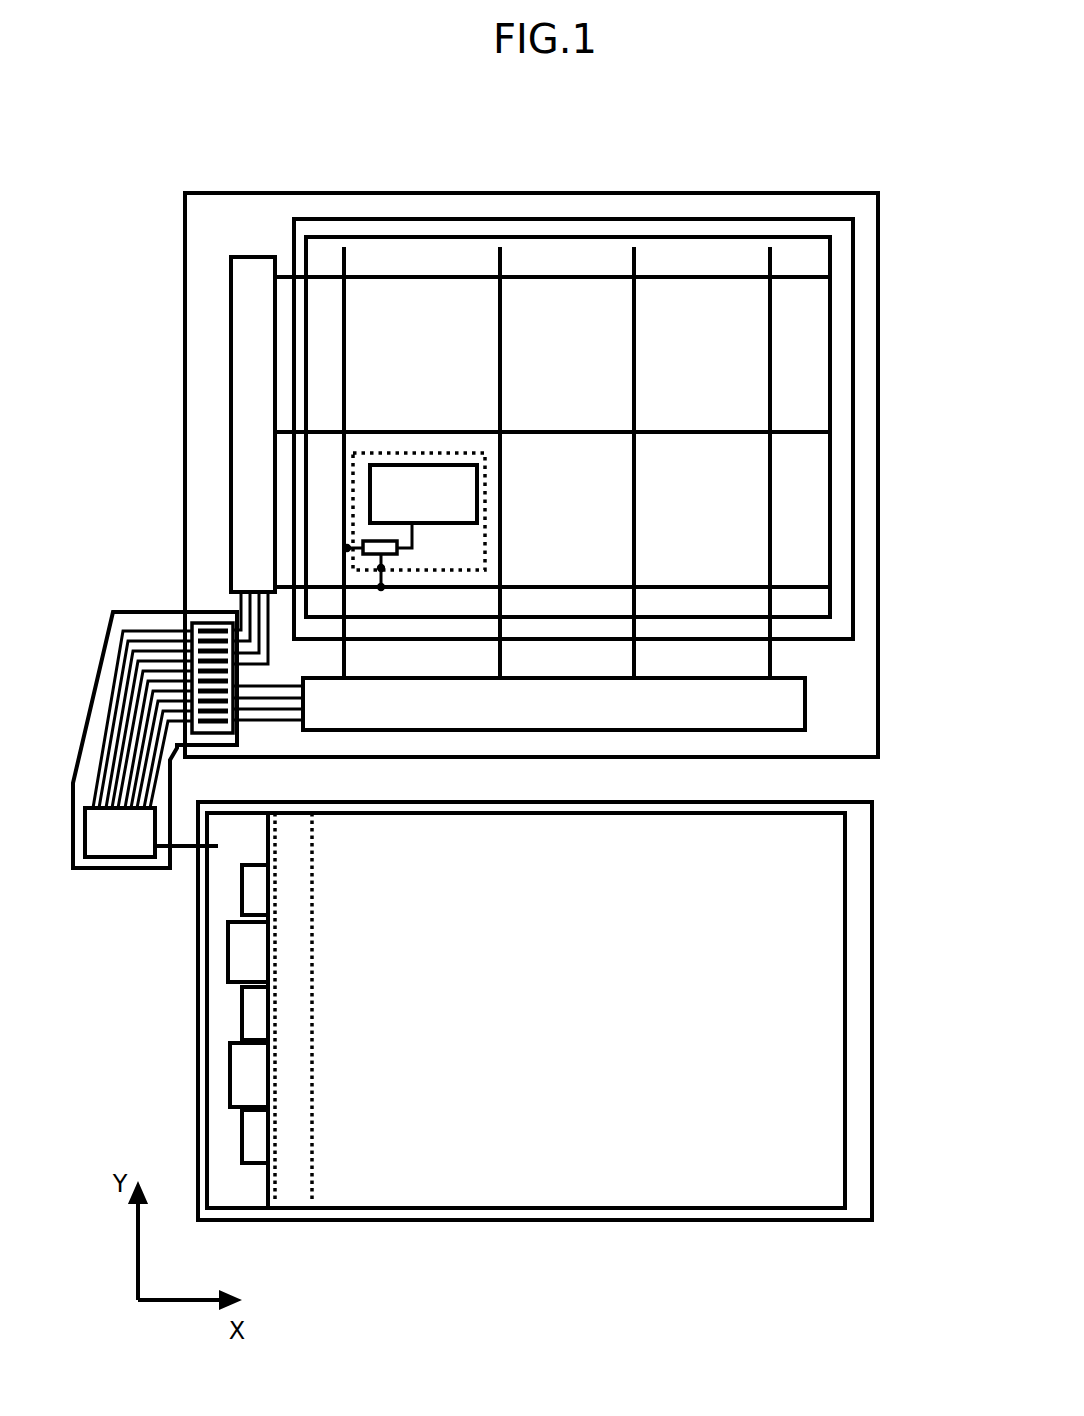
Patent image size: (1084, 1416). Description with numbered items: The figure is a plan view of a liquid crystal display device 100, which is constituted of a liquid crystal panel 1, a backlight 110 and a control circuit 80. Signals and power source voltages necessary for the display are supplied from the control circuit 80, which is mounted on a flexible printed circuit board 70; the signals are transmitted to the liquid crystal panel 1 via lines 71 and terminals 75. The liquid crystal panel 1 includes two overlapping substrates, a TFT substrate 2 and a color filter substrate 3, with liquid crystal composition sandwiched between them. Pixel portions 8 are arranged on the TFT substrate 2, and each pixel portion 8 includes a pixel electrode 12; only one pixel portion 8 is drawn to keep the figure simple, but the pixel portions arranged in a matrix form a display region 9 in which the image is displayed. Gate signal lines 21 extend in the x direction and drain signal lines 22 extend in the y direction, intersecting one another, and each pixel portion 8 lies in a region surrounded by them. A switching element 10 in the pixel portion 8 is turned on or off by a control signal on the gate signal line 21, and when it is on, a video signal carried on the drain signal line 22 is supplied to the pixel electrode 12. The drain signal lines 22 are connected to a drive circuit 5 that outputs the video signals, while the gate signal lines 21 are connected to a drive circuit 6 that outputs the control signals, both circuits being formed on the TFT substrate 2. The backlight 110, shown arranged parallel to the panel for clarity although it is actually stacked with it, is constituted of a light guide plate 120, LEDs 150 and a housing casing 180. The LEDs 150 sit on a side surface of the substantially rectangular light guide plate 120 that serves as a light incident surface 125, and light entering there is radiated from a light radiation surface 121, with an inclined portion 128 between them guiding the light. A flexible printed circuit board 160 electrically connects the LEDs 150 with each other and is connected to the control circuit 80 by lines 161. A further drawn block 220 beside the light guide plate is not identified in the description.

The liquid crystal panel 1 is at (548, 193).
The TFT substrate 2 is at (301, 193).
The color filter substrate 3 is at (388, 219).
The drive circuit 5 is at (805, 700).
The drive circuit 6 is at (248, 264).
The pixel portion 8 is at (487, 476).
The display region 9 is at (682, 250).
The switching element 10 is at (397, 549).
The pixel electrode 12 is at (435, 497).
The gate signal line 21 is at (553, 430).
The drain signal line 22 is at (348, 372).
The flexible printed circuit board 70 is at (145, 617).
The lines 71 is at (123, 612).
The terminals 75 is at (207, 625).
The control circuit 80 is at (110, 845).
The liquid crystal display device 100 is at (570, 1262).
The backlight 110 is at (637, 1223).
The light guide plate 120 is at (783, 1210).
The light radiation surface 121 is at (693, 1092).
The light incident surface 125 is at (265, 1005).
The inclined portion 128 is at (306, 1197).
The LEDs 150 is at (243, 1137).
The flexible printed circuit board 160 is at (217, 1073).
The lines 161 is at (183, 850).
The housing casing 180 is at (433, 1215).
The light source 220 is at (252, 955).